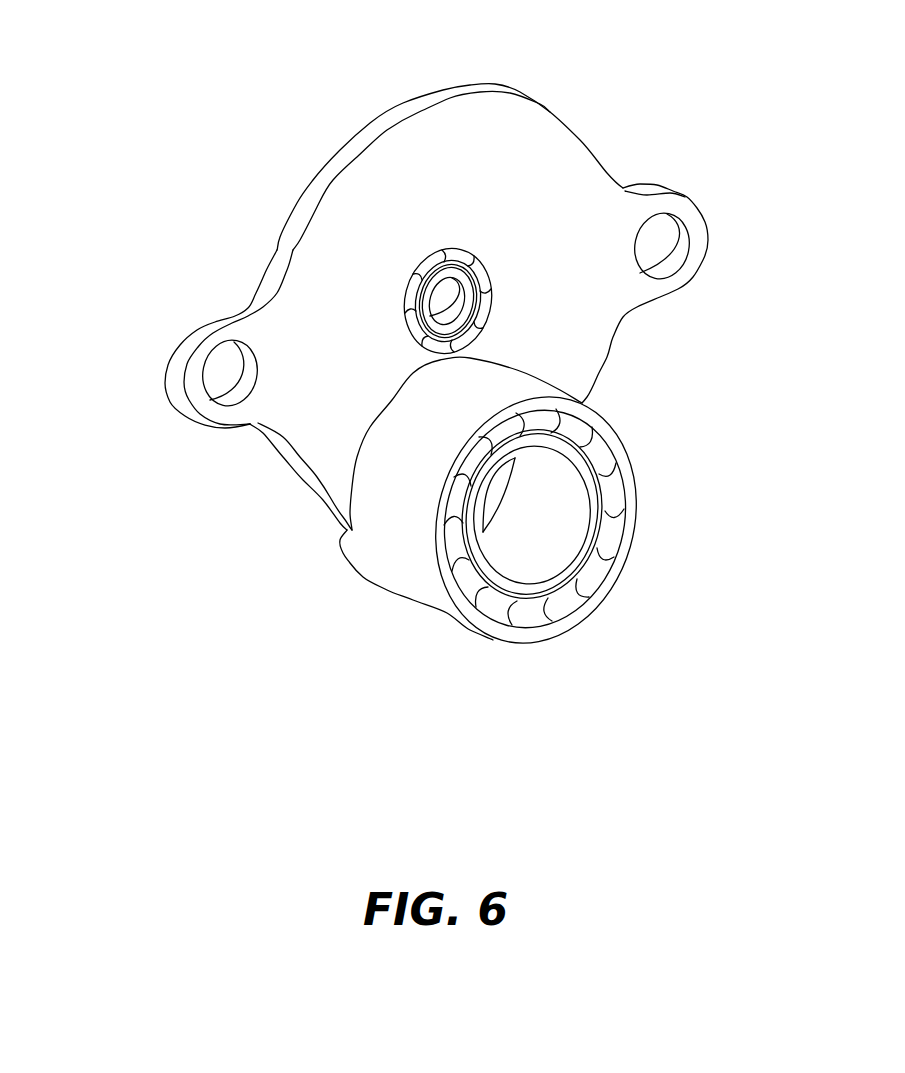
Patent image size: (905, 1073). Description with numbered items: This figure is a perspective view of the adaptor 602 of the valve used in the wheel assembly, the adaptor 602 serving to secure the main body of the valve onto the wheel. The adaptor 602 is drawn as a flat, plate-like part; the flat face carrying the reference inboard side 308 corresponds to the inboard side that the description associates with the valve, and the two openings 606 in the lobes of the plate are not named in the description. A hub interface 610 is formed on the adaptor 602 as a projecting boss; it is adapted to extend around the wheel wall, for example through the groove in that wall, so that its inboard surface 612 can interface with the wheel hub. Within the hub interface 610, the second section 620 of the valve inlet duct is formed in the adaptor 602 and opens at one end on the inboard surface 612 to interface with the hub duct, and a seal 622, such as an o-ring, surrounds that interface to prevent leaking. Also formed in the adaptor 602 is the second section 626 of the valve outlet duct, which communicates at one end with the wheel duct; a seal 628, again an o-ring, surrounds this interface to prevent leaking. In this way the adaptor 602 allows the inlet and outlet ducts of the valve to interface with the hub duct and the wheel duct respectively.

The adaptor 602 is at (266, 149).
The inboard side 308 is at (526, 145).
The mounting holes 606 is at (217, 377).
The seal 628 is at (430, 262).
The second section 626 is at (480, 272).
The hub interface 610 is at (497, 392).
The inboard surface 612 is at (493, 640).
The seal 622 is at (523, 595).
The second section 620 is at (547, 527).